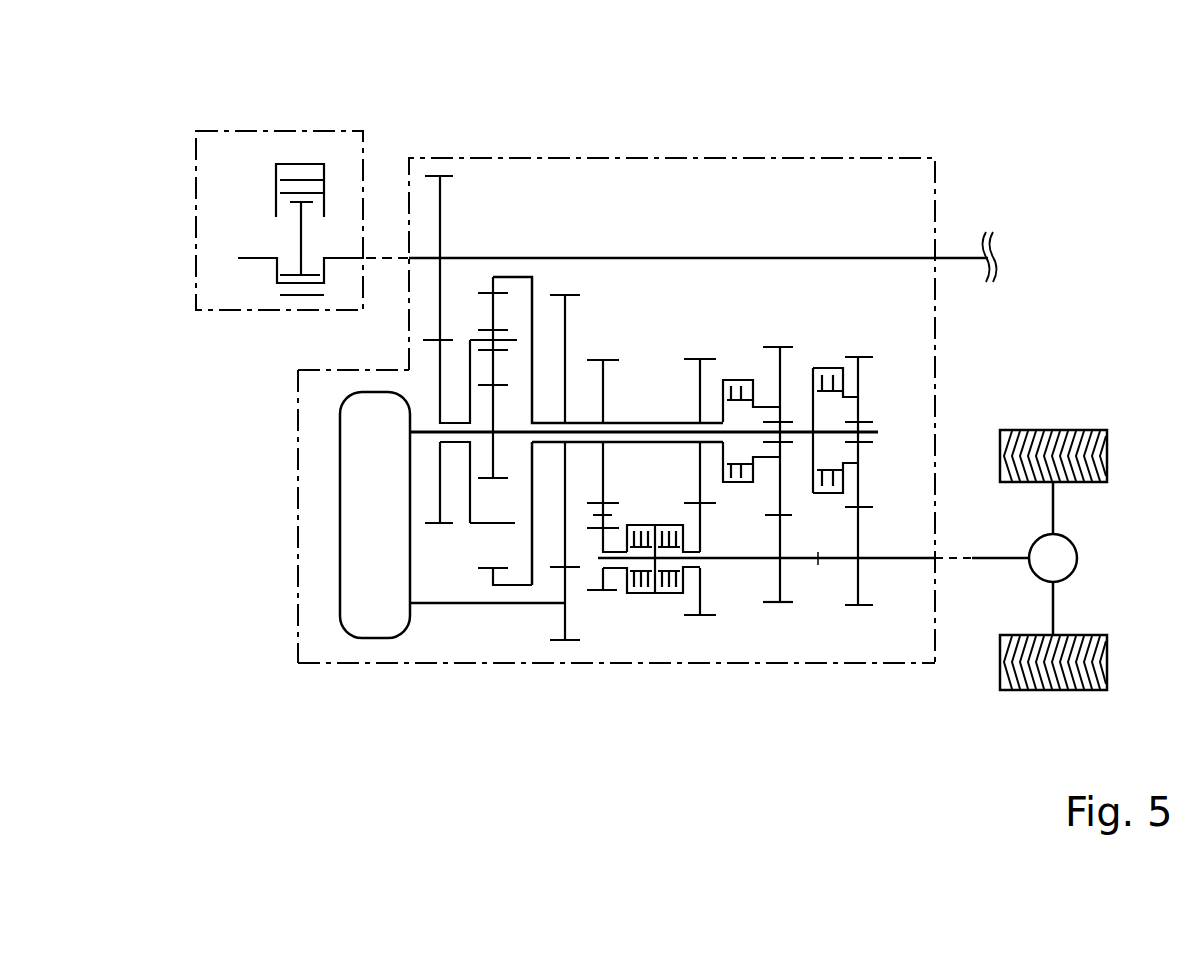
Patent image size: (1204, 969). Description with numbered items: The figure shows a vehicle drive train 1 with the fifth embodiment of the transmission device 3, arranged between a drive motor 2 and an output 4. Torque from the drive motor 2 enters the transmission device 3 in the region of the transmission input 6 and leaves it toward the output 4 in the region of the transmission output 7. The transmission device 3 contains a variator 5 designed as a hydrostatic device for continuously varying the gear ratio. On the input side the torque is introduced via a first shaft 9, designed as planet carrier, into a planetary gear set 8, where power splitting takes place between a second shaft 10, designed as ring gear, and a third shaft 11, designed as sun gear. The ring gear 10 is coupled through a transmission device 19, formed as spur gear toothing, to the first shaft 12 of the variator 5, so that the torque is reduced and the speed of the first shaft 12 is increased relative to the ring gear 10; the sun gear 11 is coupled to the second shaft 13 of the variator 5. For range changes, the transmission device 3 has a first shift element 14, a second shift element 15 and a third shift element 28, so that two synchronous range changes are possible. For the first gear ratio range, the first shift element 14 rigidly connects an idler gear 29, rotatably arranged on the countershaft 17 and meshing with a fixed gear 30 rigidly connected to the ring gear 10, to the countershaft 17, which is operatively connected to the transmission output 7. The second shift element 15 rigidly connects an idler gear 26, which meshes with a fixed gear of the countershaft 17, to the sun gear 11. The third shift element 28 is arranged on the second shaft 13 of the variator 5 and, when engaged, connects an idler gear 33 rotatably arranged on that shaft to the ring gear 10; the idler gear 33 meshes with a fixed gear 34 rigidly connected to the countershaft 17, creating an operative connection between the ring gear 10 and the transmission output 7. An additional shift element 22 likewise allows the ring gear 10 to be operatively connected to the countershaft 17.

The vehicle drive train 1 is at (265, 570).
The drive motor 2 is at (246, 128).
The transmission device 3 is at (360, 663).
The output 4 is at (1052, 672).
The variator 5 is at (370, 575).
The transmission input 6 is at (408, 255).
The transmission output 7 is at (937, 560).
The planetary gear set 8 is at (500, 248).
The first shaft 9 is at (477, 338).
The second shaft 10 is at (520, 277).
The third shaft 11 is at (495, 450).
The first shaft of the variator 12 is at (437, 605).
The second shaft of the variator 13 is at (427, 430).
The first shift element 14 is at (673, 630).
The second shift element 15 is at (828, 340).
The countershaft 17 is at (820, 562).
The transmission device 19 is at (556, 578).
The additional shift element 22 is at (637, 630).
The idler gear 26 is at (867, 352).
The third shift element 28 is at (785, 345).
The idler gear 29 is at (700, 592).
The fixed gear 30 is at (690, 357).
The idler gear 33 is at (738, 340).
The fixed gear 34 is at (783, 605).